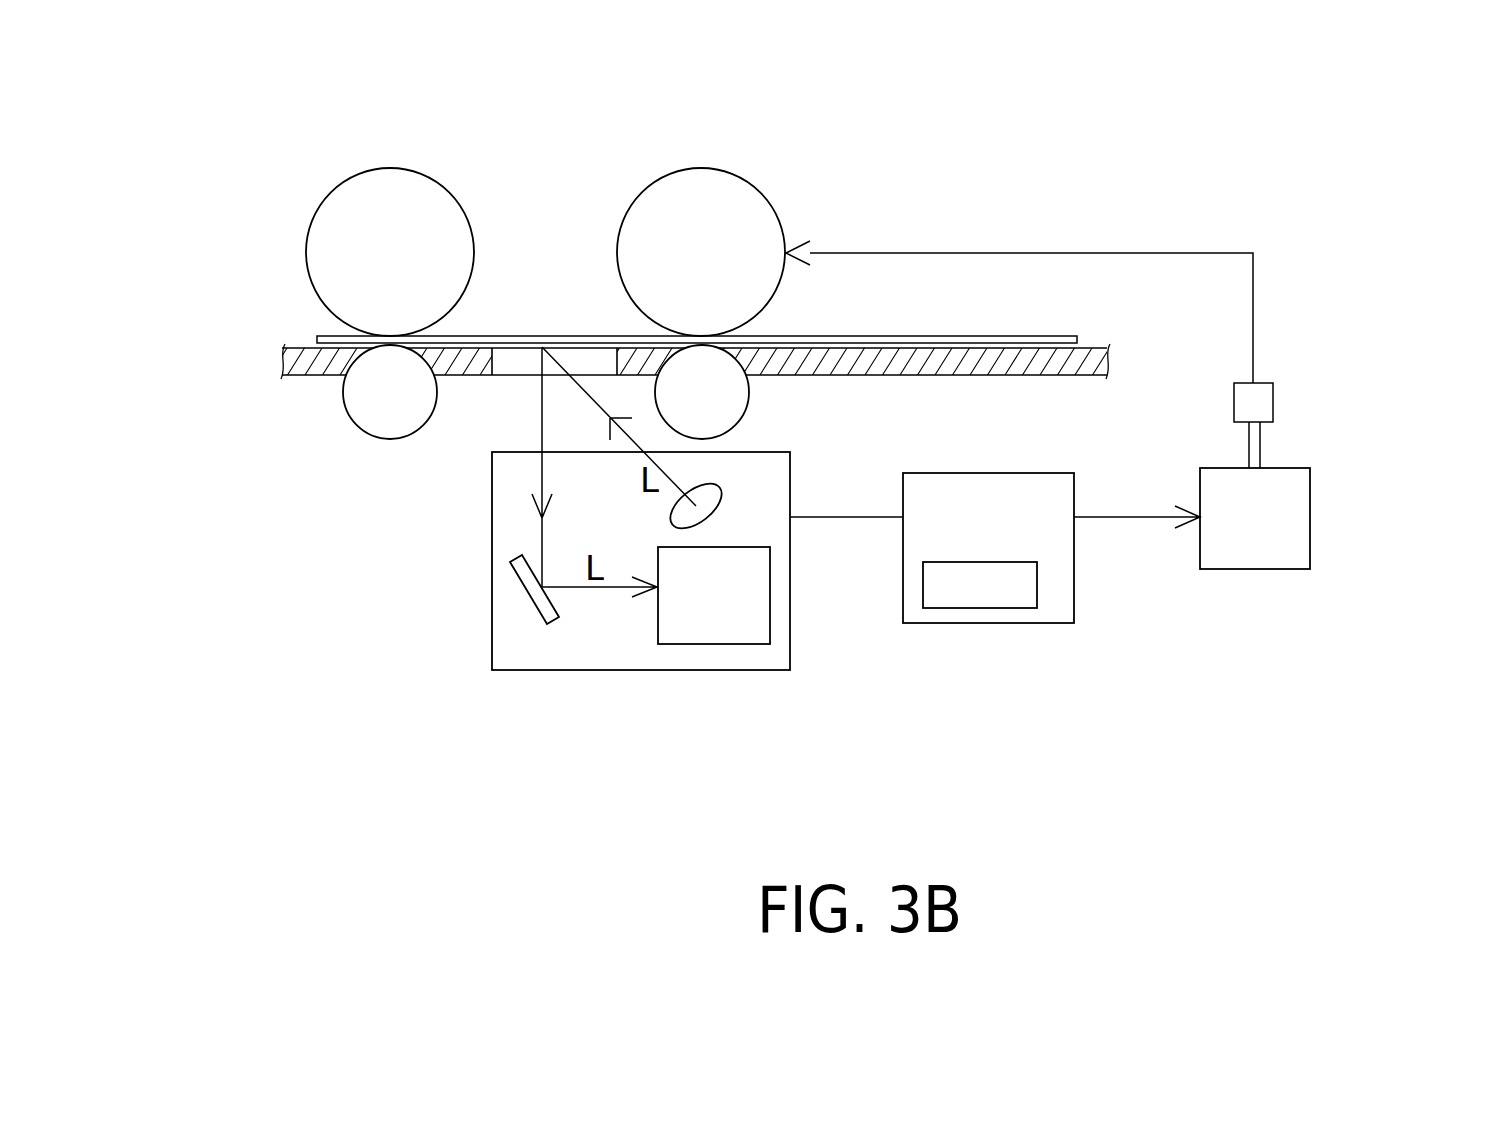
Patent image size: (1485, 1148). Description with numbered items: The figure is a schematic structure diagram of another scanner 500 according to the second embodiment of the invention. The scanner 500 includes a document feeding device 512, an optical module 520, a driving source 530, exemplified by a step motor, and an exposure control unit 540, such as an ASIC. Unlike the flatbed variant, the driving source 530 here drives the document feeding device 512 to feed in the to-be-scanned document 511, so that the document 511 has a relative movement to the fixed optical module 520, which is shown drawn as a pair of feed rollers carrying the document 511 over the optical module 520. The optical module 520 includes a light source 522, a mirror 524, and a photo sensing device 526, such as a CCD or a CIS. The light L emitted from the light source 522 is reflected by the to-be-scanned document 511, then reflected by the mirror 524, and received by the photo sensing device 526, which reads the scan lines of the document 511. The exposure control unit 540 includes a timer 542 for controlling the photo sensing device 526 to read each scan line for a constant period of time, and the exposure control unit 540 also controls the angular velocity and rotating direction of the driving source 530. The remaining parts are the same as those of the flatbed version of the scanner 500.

The scanner 500 is at (419, 745).
The to-be-scanned document 511 is at (317, 336).
The document feeding device 512 is at (700, 253).
The optical module 520 is at (790, 498).
The light source 522 is at (707, 487).
The mirror 524 is at (522, 592).
The photo sensing device 526 is at (772, 609).
The driving source 530 is at (1310, 525).
The exposure control unit 540 is at (990, 473).
The timer 542 is at (978, 608).